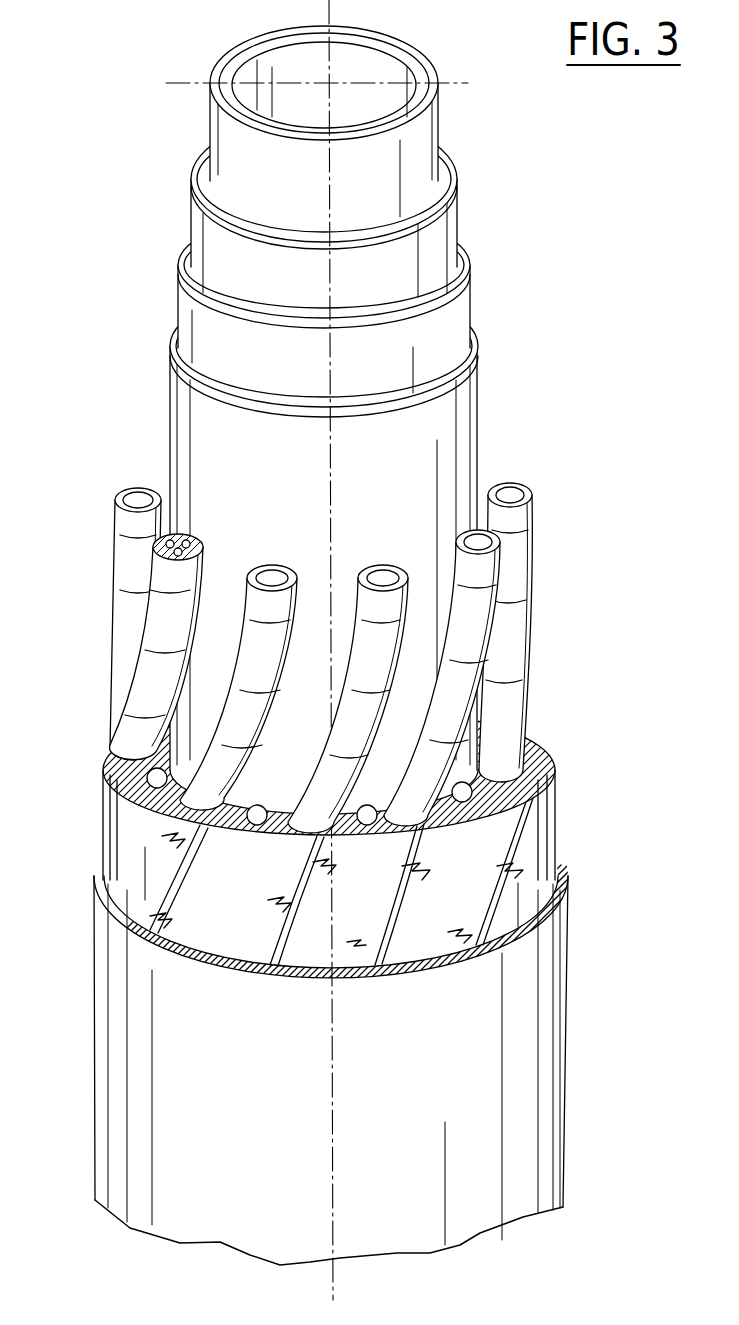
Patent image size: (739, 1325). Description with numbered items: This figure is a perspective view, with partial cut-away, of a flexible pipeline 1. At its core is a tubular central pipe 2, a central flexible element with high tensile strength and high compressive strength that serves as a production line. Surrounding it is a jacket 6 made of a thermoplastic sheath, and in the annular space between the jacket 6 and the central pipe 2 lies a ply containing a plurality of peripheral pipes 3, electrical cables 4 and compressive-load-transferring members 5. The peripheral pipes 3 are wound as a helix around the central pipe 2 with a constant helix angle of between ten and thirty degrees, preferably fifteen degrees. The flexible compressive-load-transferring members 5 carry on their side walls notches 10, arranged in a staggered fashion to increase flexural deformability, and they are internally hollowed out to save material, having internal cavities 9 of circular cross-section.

The flexible pipeline 1 is at (143, 170).
The tubular central pipe 2 is at (447, 446).
The peripheral pipes 3 is at (518, 609).
The electrical cables 4 is at (148, 660).
The compressive-load-transferring members 5 is at (130, 800).
The jacket 6 is at (95, 890).
The internal cavities 9 is at (103, 763).
The notches 10 is at (275, 905).